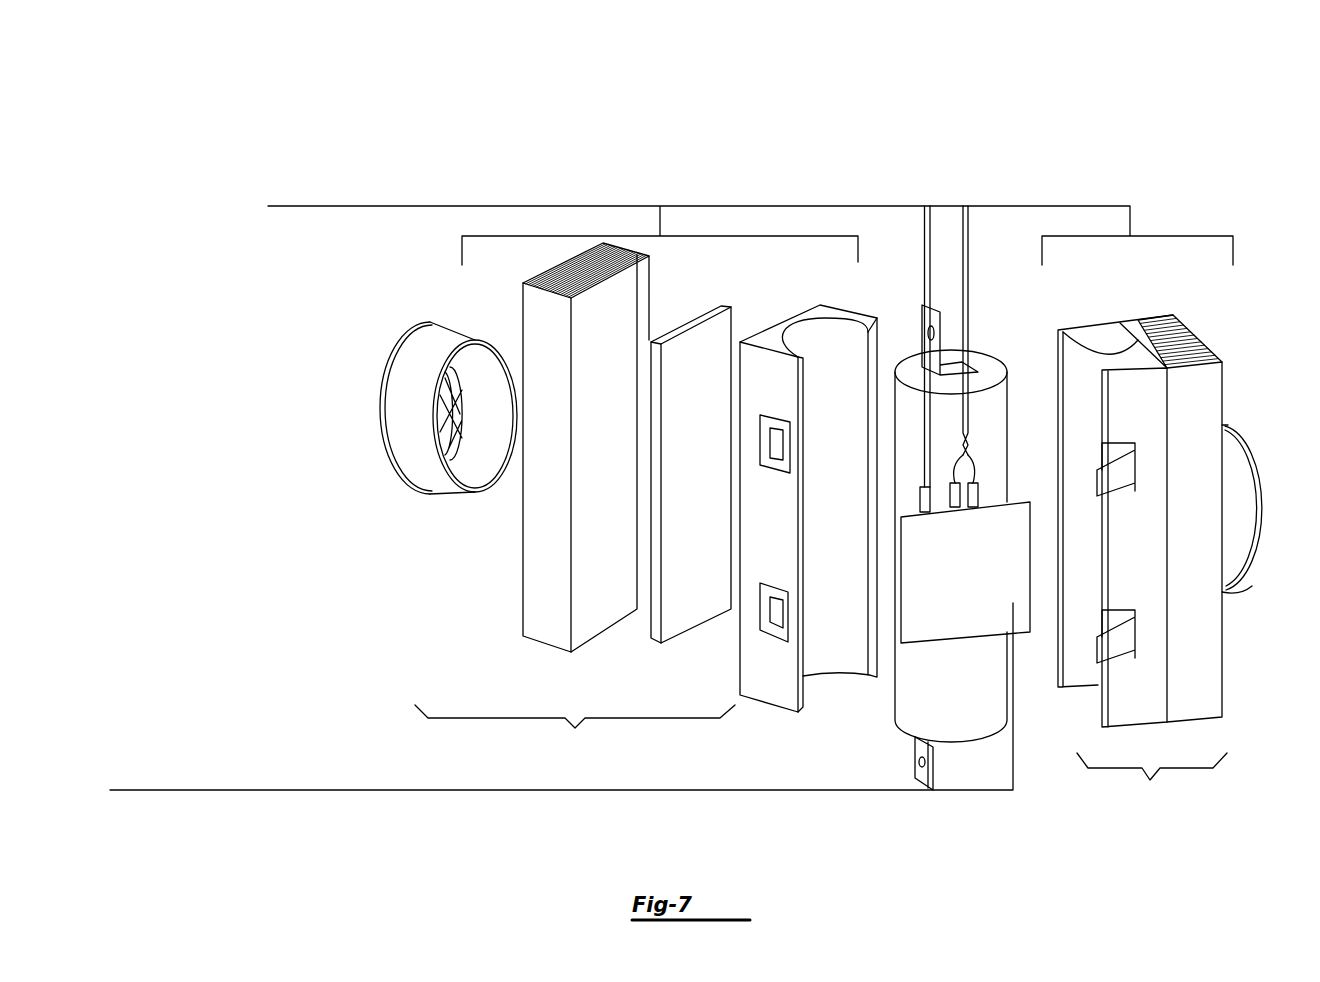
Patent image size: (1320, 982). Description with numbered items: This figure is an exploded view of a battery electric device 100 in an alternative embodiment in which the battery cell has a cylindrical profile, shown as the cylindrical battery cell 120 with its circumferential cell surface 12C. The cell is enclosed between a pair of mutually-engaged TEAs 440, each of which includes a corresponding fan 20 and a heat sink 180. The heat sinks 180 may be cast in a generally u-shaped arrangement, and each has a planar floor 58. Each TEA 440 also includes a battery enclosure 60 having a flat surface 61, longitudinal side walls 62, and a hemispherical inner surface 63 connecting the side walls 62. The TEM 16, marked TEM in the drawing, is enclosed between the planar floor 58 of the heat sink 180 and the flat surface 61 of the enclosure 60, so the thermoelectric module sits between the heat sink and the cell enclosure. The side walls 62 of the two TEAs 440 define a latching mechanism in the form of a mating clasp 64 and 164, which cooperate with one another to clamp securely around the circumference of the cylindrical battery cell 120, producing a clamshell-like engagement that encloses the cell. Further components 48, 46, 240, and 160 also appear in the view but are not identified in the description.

The battery electric device 100 is at (1187, 90).
The fan 20 is at (432, 388).
The heat sink 180 is at (362, 447).
The TEM 16 is at (362, 447).
The planar floor 58 is at (616, 462).
The element TEM is at (704, 484).
The battery enclosure 60 is at (780, 515).
The flat surface 61 is at (782, 323).
The longitudinal side walls 62 is at (767, 687).
The hemispherical inner surface 63 is at (847, 657).
The mating clasp 64 is at (762, 625).
The terminal bracket 48 is at (925, 268).
The wires 46 is at (968, 292).
The circumferential cell surface 12C is at (972, 498).
The cylindrical battery cell 120 is at (970, 700).
The circuit board 240 is at (970, 588).
The second heat sink assembly 160 is at (1182, 521).
The mating clasp 164 is at (1120, 638).
The TEA 440 is at (821, 759).